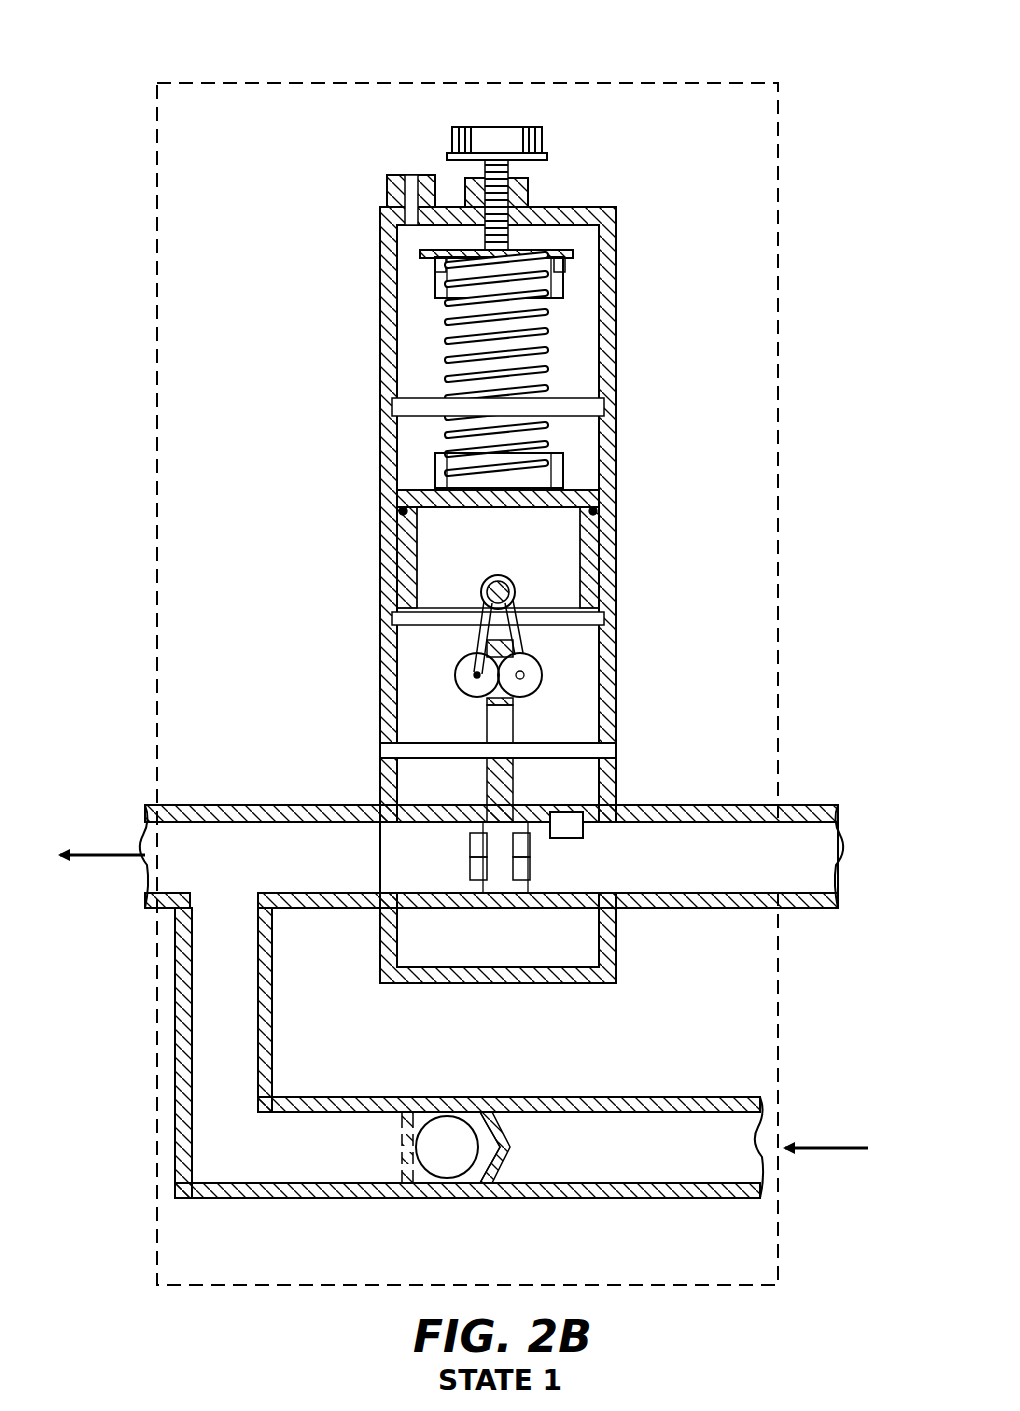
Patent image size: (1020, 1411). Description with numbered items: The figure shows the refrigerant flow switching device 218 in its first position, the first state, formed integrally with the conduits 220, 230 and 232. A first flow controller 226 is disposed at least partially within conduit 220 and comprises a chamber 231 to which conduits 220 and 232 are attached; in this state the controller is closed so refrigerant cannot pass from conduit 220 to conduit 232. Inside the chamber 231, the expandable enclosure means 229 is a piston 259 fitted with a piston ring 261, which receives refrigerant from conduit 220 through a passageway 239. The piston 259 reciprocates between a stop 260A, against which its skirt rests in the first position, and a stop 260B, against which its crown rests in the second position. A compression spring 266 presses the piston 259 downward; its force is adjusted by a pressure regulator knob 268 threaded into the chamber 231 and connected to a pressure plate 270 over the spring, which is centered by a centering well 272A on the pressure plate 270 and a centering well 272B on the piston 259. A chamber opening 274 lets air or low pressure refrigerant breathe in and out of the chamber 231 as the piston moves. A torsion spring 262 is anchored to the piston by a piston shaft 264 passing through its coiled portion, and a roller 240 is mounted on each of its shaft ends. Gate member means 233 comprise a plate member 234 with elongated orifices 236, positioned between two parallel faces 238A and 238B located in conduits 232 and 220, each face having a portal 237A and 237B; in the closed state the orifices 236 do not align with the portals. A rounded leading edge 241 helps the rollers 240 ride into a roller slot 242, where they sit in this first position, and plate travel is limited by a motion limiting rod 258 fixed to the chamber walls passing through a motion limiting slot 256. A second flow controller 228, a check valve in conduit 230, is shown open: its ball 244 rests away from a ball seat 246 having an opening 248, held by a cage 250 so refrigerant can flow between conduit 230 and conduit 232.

The refrigerant flow switching device 218 is at (655, 80).
The conduit 220 is at (838, 805).
The first flow controller 226 is at (623, 433).
The second flow controller 228 is at (470, 1208).
The expandable enclosure means 229 is at (580, 488).
The conduit 230 is at (760, 1105).
The chamber 231 is at (575, 330).
The conduit 232 is at (145, 808).
The gate member means 233 is at (585, 745).
The plate member 234 is at (480, 783).
The orifices 236 is at (500, 890).
The portal 237A is at (470, 878).
The portal 237B is at (530, 878).
The face 238A is at (470, 848).
The face 238B is at (530, 848).
The passageway 239 is at (565, 812).
The roller 240 is at (531, 690).
The leading edge 241 is at (458, 682).
The roller slot 242 is at (525, 652).
The ball 244 is at (440, 1120).
The ball seat 246 is at (505, 1160).
The opening 248 is at (505, 1140).
The cage 250 is at (402, 1120).
The motion limiting slot 256 is at (513, 728).
The motion limiting rod 258 is at (616, 750).
The piston 259 is at (403, 512).
The stop 260A is at (395, 618).
The stop 260B is at (395, 407).
The piston ring 261 is at (598, 511).
The torsion spring 262 is at (487, 650).
The piston shaft 264 is at (515, 592).
The compression spring 266 is at (545, 385).
The pressure regulator knob 268 is at (547, 141).
The pressure plate 270 is at (573, 253).
The centering well 272A is at (563, 290).
The centering well 272B is at (435, 468).
The chamber opening 274 is at (388, 177).